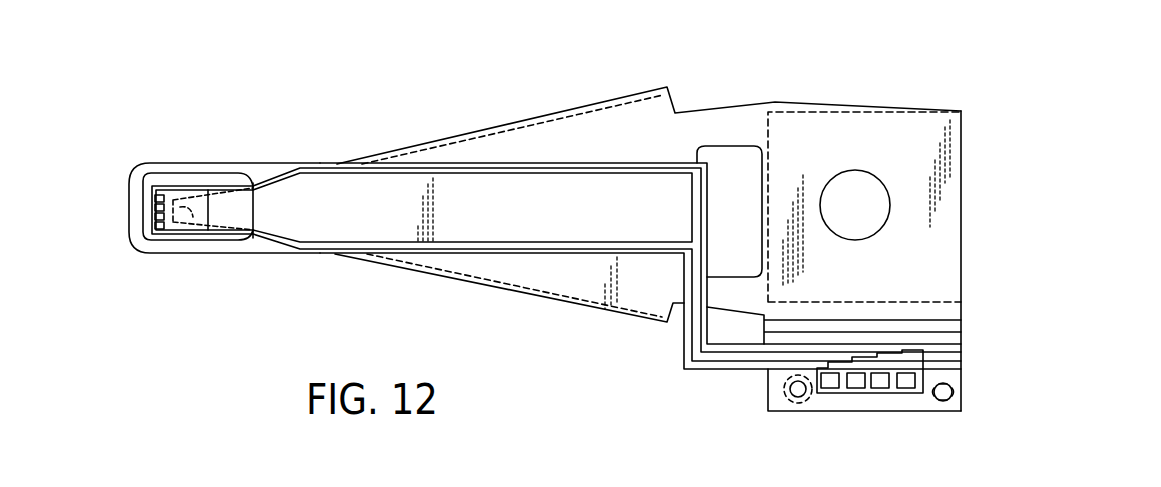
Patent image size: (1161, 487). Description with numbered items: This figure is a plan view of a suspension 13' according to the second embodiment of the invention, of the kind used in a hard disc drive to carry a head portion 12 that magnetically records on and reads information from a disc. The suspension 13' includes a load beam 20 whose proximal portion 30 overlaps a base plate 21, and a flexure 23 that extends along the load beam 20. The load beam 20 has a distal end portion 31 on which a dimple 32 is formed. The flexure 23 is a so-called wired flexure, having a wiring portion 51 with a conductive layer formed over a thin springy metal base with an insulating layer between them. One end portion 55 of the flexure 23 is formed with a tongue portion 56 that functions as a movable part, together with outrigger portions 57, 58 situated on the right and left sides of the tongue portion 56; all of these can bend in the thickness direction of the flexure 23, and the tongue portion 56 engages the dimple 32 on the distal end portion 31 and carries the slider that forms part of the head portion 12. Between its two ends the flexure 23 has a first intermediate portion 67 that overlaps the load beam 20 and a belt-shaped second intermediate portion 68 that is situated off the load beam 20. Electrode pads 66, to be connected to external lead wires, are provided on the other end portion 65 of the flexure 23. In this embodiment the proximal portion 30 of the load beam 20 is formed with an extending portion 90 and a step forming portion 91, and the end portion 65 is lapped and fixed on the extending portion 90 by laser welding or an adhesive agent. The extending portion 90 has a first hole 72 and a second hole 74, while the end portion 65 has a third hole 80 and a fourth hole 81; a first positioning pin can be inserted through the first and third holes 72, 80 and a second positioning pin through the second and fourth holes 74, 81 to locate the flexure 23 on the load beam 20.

The head portion 12 is at (184, 163).
The suspension 13' is at (472, 62).
The load beam 20 is at (633, 113).
The base plate 21 is at (816, 118).
The flexure 23 is at (508, 255).
The proximal portion 30 is at (912, 120).
The distal end portion 31 is at (208, 237).
The dimple 32 is at (174, 238).
The wiring portion 51 is at (696, 351).
The one end portion 55 is at (133, 182).
The tongue portion 56 is at (216, 192).
The outrigger portion 57 is at (205, 171).
The outrigger portion 58 is at (192, 243).
The other end portion 65 is at (897, 404).
The electrode pads 66 is at (906, 389).
The first intermediate portion 67 is at (592, 163).
The second intermediate portion 68 is at (684, 332).
The first hole 72 is at (945, 408).
The second hole 74 is at (808, 406).
The third hole 80 is at (933, 400).
The fourth hole 81 is at (789, 398).
The extending portion 90 is at (768, 388).
The step forming portion 91 is at (903, 327).